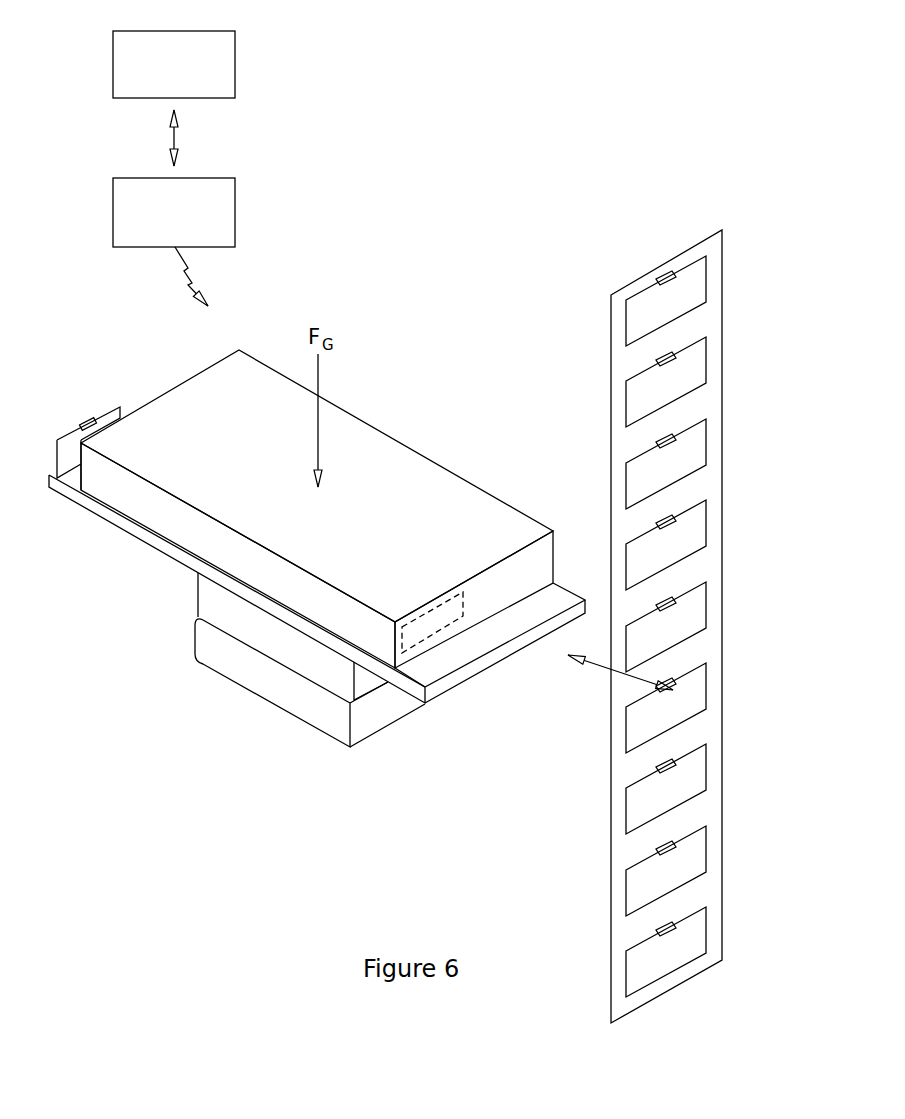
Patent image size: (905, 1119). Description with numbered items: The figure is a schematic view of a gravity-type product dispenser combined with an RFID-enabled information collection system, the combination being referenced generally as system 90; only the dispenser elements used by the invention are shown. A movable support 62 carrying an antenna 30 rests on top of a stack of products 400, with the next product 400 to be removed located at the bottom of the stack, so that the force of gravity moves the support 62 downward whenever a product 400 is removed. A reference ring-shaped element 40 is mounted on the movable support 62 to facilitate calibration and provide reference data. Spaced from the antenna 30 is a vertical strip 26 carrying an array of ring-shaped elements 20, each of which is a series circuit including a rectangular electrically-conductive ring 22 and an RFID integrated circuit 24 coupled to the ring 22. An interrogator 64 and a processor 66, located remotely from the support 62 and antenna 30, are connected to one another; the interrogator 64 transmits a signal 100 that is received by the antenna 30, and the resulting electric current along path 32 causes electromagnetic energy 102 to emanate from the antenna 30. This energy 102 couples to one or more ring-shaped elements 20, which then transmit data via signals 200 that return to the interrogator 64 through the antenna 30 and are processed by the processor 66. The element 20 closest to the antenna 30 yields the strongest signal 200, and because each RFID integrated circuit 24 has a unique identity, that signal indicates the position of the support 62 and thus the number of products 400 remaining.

The processor 66 is at (113, 44).
The interrogator 64 is at (113, 203).
The signal 100 is at (190, 272).
The reference ring-shaped element 40 is at (96, 400).
The movable support 62 is at (105, 522).
The antenna 30 is at (498, 512).
The electromagnetic energy 102 is at (430, 642).
The path 32 is at (392, 668).
The products 400 is at (205, 590).
The signal 200 is at (600, 660).
The system 90 is at (593, 150).
The strip 26 is at (723, 262).
The ring-shaped element 20 is at (730, 342).
The electrically-conductive ring 22 is at (707, 608).
The RFID integrated circuit 24 is at (668, 597).